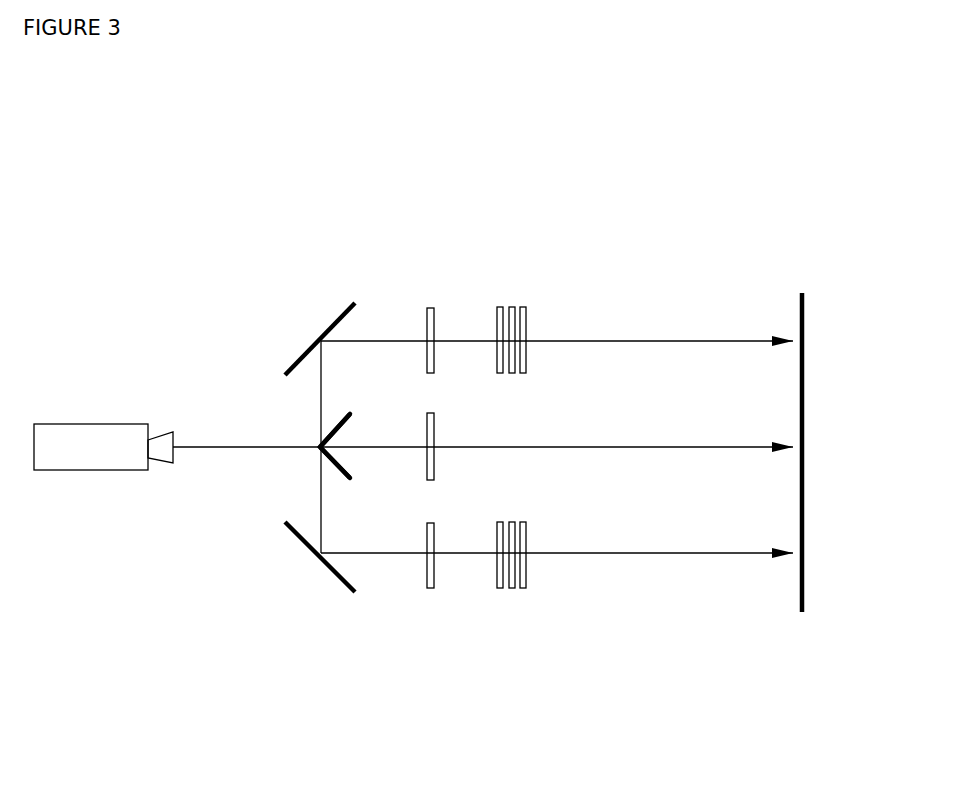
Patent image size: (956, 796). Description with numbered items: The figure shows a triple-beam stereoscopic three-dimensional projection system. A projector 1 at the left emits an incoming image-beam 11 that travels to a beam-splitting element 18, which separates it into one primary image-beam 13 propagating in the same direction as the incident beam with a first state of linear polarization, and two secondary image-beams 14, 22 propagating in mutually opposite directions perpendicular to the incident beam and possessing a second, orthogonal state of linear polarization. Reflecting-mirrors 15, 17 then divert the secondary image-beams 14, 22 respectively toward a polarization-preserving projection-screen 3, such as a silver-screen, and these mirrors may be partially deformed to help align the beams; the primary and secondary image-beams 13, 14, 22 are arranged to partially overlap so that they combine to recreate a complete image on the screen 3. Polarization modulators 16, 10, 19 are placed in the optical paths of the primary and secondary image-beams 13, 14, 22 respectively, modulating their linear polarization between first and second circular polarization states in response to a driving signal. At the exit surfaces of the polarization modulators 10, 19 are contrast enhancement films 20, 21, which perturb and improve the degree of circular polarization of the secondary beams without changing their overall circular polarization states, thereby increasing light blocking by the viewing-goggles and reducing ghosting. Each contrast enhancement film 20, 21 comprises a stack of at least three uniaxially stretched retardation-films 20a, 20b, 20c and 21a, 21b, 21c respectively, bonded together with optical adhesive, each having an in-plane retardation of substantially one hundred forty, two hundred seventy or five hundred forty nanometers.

The light source (laser) 1 is at (74, 422).
The polarization-preserving projection-screen 3 is at (808, 313).
The polarization modulator 10 is at (423, 312).
The incoming image-beam 11 is at (203, 443).
The primary image-beam 13 is at (388, 443).
The secondary image-beam 14 is at (316, 413).
The reflecting-mirror 15 is at (290, 360).
The polarization modulator 16 is at (438, 432).
The reflecting-mirror 17 is at (291, 540).
The beam-splitting element 18 is at (356, 484).
The polarization modulator 19 is at (440, 532).
The contrast enhancement film 20 is at (544, 275).
The uniaxially stretched retardation-film 20a is at (500, 304).
The uniaxially stretched retardation-film 20b is at (513, 304).
The uniaxially stretched retardation-film 20c is at (526, 304).
The contrast enhancement film 21 is at (544, 618).
The uniaxially stretched retardation-film 21a is at (500, 592).
The uniaxially stretched retardation-film 21b is at (513, 592).
The uniaxially stretched retardation-film 21c is at (528, 592).
The secondary image-beam 22 is at (316, 482).